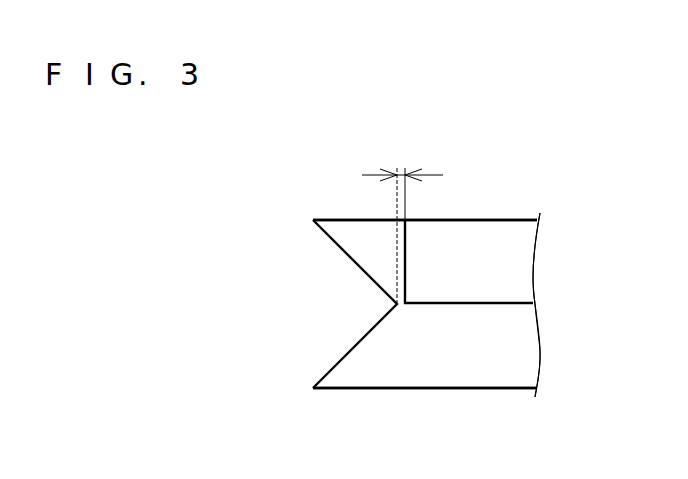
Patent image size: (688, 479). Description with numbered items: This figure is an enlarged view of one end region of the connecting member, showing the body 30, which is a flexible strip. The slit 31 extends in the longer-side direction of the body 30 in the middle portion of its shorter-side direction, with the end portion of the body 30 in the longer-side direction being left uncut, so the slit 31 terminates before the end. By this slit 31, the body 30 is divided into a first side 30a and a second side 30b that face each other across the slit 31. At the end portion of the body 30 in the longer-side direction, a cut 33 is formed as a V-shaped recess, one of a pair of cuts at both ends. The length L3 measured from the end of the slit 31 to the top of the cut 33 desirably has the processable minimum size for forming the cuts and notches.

The body 30 is at (410, 307).
The first side 30a is at (505, 232).
The second side 30b is at (477, 372).
The slit 31 is at (470, 303).
The cut 33 is at (355, 342).
The length from the end of the slit to the top of the cut L3 is at (393, 224).